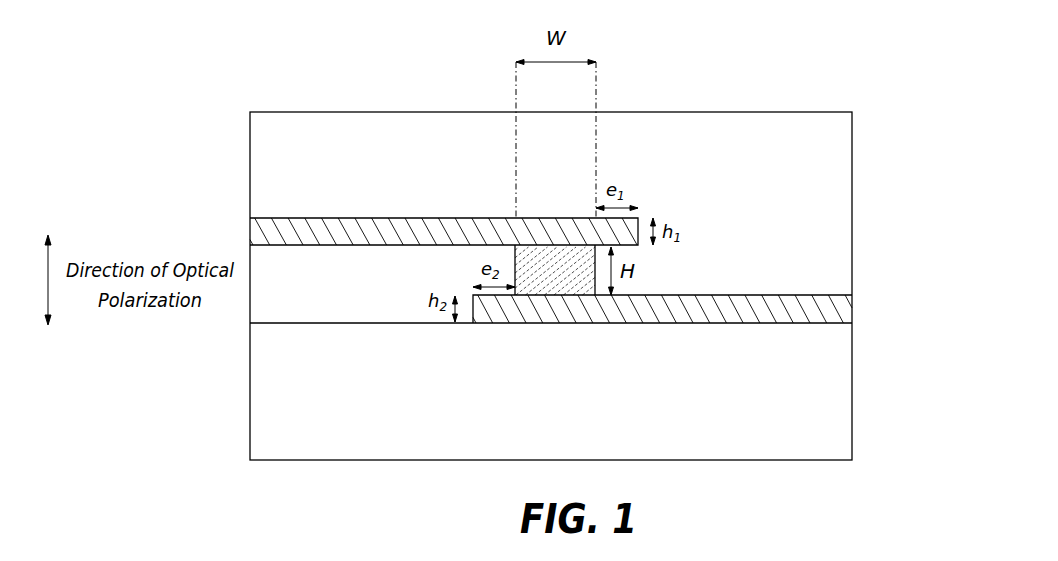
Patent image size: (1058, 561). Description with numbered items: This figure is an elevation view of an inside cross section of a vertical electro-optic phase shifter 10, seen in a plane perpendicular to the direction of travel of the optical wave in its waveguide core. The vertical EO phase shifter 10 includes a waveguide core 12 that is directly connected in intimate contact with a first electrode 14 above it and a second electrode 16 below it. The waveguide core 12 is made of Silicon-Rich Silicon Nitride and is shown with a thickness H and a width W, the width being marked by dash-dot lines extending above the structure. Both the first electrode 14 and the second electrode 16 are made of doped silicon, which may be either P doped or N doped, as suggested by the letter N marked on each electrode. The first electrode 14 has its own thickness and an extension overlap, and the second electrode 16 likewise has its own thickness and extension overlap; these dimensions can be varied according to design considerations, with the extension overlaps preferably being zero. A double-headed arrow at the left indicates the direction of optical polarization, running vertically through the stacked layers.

The vertical electro-optic phase shifter 10 is at (245, 75).
The waveguide core 12 is at (513, 250).
The first electrode 14 is at (443, 218).
The second electrode 16 is at (767, 323).